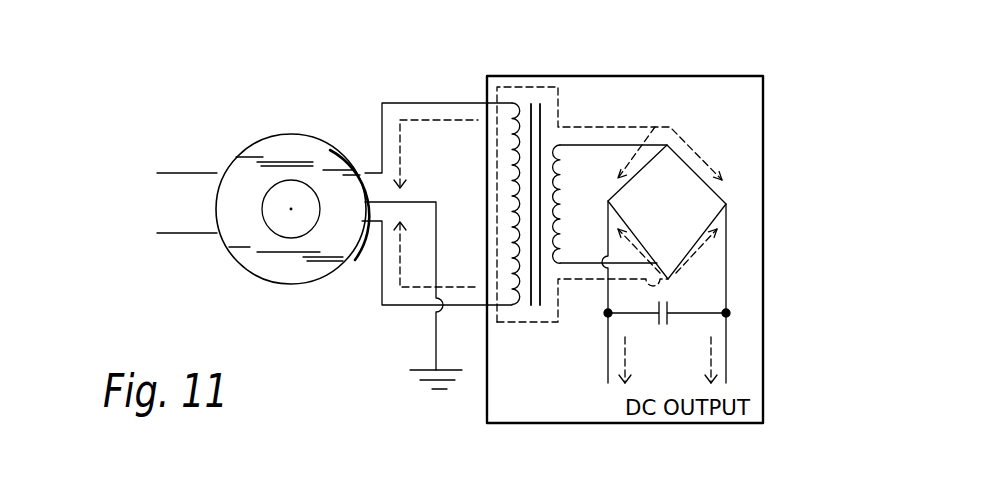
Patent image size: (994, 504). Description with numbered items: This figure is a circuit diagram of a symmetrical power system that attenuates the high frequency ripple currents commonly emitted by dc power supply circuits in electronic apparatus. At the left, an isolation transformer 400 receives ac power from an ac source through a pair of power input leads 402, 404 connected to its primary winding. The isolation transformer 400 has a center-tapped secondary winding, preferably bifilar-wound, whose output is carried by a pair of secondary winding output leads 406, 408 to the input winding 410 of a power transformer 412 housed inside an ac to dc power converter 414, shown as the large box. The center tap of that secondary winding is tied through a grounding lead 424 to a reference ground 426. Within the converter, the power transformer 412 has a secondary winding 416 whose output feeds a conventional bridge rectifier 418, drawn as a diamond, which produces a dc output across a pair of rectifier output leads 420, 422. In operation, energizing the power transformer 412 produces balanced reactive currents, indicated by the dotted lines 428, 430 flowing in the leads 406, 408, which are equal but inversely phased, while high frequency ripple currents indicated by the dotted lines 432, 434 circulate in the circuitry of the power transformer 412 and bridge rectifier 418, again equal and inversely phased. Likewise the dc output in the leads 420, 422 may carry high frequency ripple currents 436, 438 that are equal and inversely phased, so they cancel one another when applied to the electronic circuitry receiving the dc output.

The isolation transformer 400 is at (287, 135).
The power input lead 402 is at (183, 173).
The power input lead 404 is at (177, 233).
The secondary winding output lead 406 is at (358, 168).
The secondary winding output lead 408 is at (375, 223).
The input winding 410 is at (505, 103).
The power transformer 412 is at (536, 101).
The ac to dc power converter 414 is at (517, 425).
The secondary winding 416 is at (553, 177).
The bridge rectifier 418 is at (682, 180).
The rectifier output lead 420 is at (727, 338).
The rectifier output lead 422 is at (607, 355).
The grounding lead 424 is at (435, 328).
The reference ground 426 is at (423, 368).
The balanced reactive current 428 is at (435, 120).
The balanced reactive current 430 is at (462, 288).
The high frequency ripple current 432 is at (643, 127).
The high frequency ripple current 434 is at (650, 280).
The high frequency ripple current 436 is at (613, 362).
The high frequency ripple current 438 is at (712, 367).